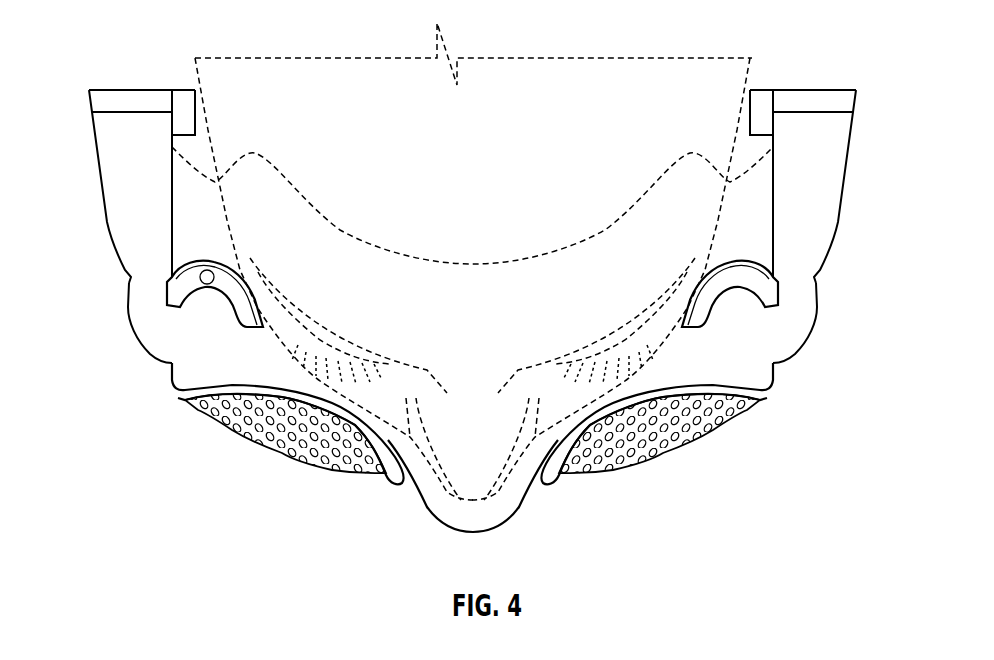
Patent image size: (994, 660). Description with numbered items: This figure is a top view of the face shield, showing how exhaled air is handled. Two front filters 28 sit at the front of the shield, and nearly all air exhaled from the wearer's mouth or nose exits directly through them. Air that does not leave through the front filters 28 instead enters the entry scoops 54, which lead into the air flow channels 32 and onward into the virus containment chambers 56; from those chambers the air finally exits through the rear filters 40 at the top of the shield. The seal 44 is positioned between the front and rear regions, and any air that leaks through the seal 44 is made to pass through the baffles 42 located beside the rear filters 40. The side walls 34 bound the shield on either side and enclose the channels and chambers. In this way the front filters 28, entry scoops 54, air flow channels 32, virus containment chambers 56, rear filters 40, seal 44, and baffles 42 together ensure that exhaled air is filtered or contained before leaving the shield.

The front filter 28 is at (330, 450).
The air flow channel 32 is at (143, 315).
The side wall 34 is at (103, 200).
The rear filter 40 is at (117, 100).
The baffle 42 is at (185, 100).
The seal 44 is at (738, 278).
The entry scoop 54 is at (184, 336).
The virus containment chamber 56 is at (122, 216).